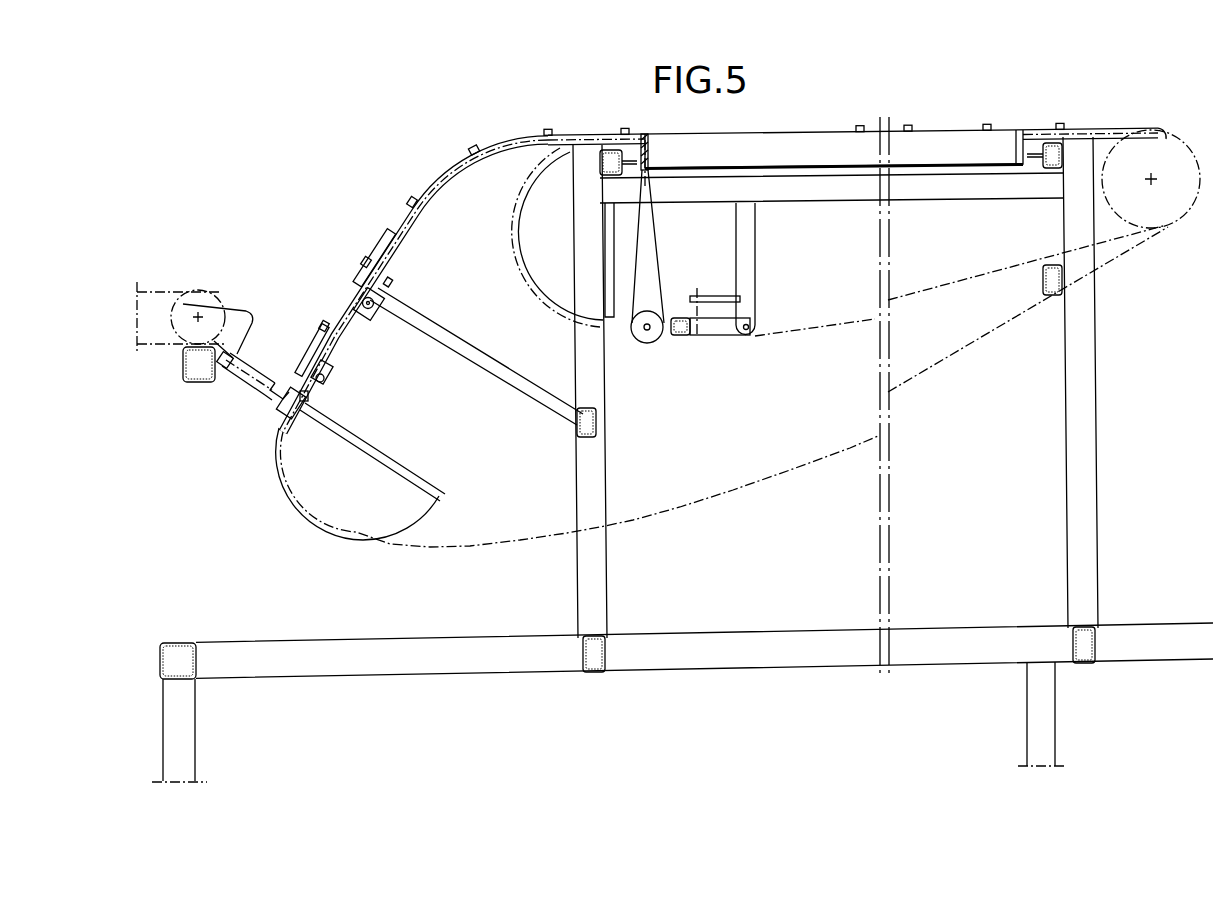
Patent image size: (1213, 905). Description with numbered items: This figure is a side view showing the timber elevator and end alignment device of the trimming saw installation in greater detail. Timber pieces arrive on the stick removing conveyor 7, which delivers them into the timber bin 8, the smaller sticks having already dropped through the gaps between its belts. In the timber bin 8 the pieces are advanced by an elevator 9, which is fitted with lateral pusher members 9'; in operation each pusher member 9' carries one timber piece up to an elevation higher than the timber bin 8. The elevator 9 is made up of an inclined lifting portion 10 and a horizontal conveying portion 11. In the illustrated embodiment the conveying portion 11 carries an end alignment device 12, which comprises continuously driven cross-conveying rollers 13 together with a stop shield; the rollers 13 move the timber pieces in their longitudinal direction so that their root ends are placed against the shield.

The stick removing conveyor 7 is at (183, 292).
The timber bin 8 is at (271, 348).
The elevator 9 is at (724, 264).
The lateral pusher members 9' is at (314, 309).
The inclined lifting portion 10 is at (403, 215).
The horizontal conveying portion 11 is at (1078, 116).
The end alignment device 12 is at (941, 122).
The cross-conveying rollers 13 is at (1012, 134).